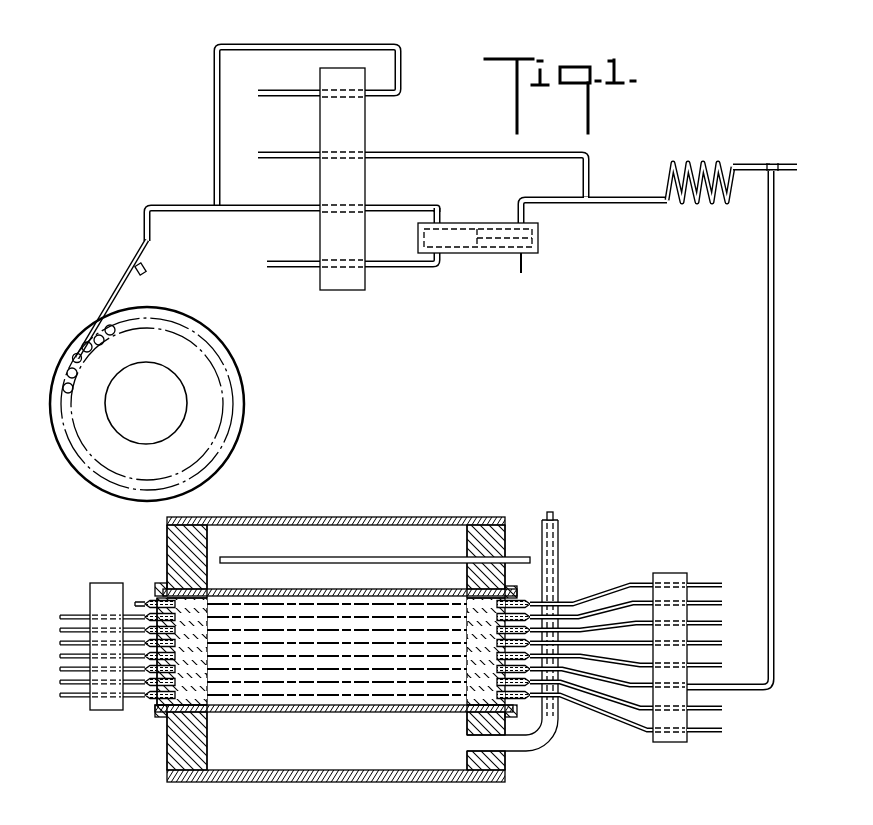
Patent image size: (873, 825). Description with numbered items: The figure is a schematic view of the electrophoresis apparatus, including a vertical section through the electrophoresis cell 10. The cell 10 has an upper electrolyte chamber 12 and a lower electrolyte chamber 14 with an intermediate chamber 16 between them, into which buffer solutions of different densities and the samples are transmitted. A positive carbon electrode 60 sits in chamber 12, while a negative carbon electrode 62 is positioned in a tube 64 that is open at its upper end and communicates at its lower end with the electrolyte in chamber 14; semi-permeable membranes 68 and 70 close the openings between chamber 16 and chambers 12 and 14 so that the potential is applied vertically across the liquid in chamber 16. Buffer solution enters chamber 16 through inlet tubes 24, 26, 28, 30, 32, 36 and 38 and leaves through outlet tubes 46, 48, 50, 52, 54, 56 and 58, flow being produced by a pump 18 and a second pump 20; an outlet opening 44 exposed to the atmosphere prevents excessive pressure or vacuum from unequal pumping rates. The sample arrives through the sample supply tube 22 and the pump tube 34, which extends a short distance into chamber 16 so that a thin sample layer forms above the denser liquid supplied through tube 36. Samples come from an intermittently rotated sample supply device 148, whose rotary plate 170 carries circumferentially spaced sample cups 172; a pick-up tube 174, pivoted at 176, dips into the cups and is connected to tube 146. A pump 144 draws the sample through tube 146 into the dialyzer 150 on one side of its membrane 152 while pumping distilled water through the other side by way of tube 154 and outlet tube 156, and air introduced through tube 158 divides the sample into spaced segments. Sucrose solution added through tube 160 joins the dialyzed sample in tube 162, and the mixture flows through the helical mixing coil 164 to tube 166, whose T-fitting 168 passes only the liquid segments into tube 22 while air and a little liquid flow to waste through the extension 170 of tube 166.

The electrophoresis cell 10 is at (406, 517).
The electrolyte chamber 12 is at (305, 540).
The electrolyte chamber 14 is at (330, 783).
The intermediate chamber 16 is at (307, 692).
The pump 18 is at (678, 572).
The pump 20 is at (105, 712).
The sample supply tube 22 is at (775, 458).
The inlet tube 24 is at (716, 584).
The inlet tube 26 is at (718, 606).
The inlet tube 28 is at (718, 625).
The inlet tube 30 is at (718, 645).
The inlet tube 32 is at (718, 667).
The pump tube 34 is at (603, 682).
The inlet tube 36 is at (722, 710).
The inlet tube 38 is at (722, 732).
The outlet opening 44 is at (137, 602).
The outlet tube 46 is at (60, 616).
The outlet tube 48 is at (60, 629).
The outlet tube 50 is at (60, 643).
The outlet tube 52 is at (58, 657).
The outlet tube 54 is at (60, 670).
The outlet tube 56 is at (60, 683).
The outlet tube 58 is at (62, 697).
The carbon electrode 60 is at (391, 561).
The carbon electrode 62 is at (555, 514).
The tube 64 is at (560, 542).
The semi-permeable membrane 68 is at (363, 589).
The semi-permeable membrane 70 is at (378, 713).
The pump 144 is at (368, 131).
The tube 146 is at (290, 197).
The sample supply device 148 is at (250, 381).
The dialyzer 150 is at (478, 223).
The membrane 152 is at (478, 254).
The tube 154 is at (292, 252).
The outlet tube 156 is at (524, 269).
The tube 158 is at (285, 82).
The tube 160 is at (292, 142).
The tube 162 is at (556, 205).
The helical mixing coil 164 is at (677, 165).
The tube 166 is at (748, 164).
The T-fitting 168 is at (780, 166).
The extension of tube 170 is at (237, 412).
The sample cups 172 is at (62, 385).
The pick-up tube 174 is at (123, 285).
The pivot 176 is at (147, 269).